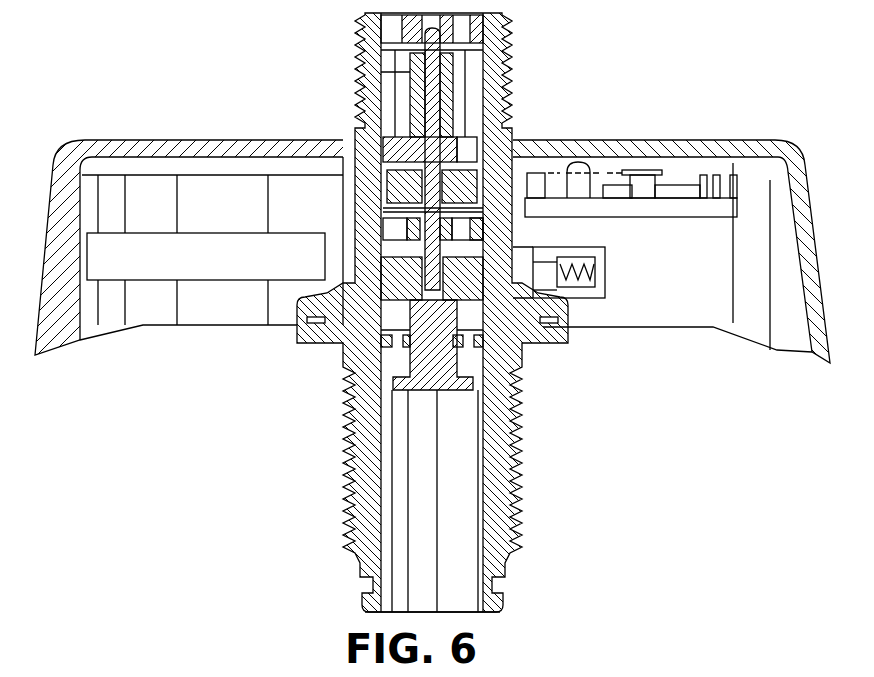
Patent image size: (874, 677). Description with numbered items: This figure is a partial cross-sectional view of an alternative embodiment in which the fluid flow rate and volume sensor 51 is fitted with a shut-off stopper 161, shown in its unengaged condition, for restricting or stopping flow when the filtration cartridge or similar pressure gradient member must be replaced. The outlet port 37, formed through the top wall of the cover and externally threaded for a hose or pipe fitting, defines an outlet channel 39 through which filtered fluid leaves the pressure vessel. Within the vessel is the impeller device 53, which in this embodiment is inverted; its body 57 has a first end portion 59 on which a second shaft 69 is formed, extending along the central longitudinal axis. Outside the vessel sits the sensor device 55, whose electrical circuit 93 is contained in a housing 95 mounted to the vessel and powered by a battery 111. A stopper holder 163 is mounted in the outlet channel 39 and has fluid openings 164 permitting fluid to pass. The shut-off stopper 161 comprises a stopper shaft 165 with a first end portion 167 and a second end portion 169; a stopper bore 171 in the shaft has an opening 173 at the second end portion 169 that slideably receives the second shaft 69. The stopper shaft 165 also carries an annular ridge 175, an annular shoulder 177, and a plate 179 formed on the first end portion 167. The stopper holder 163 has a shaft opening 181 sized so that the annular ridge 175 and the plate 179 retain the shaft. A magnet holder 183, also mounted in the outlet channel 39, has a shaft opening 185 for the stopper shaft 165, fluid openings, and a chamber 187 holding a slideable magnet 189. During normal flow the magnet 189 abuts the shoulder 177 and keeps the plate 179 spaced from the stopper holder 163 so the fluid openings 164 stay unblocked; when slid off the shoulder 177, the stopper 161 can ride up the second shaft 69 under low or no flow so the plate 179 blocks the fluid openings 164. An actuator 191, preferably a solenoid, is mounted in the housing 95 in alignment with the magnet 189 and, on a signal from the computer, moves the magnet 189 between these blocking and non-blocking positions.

The outlet port 37 is at (519, 497).
The outlet channel 39 is at (460, 531).
The fluid flow rate and volume sensor 51 is at (552, 132).
The impeller device 53 is at (512, 98).
The sensor device 55 is at (700, 223).
The body 57 is at (378, 52).
The first end portion 59 is at (385, 85).
The second shaft 69 is at (356, 134).
The electrical circuit 93 is at (676, 173).
The housing 95 is at (190, 146).
The battery 111 is at (190, 250).
The shut-off stopper 161 is at (437, 392).
The stopper holder 163 is at (519, 374).
The fluid openings 164 is at (546, 343).
The stopper shaft 165 is at (346, 369).
The first end portion 167 is at (447, 392).
The second end portion 169 is at (395, 262).
The stopper bore 171 is at (383, 268).
The opening 173 is at (470, 262).
The annular ridge 175 is at (345, 360).
The annular shoulder 177 is at (490, 284).
The plate 179 is at (355, 455).
The shaft opening 181 is at (519, 414).
The magnet holder 183 is at (596, 259).
The shaft opening 185 is at (355, 195).
The chamber 187 is at (380, 322).
The magnet 189 is at (480, 268).
The actuator 191 is at (600, 276).